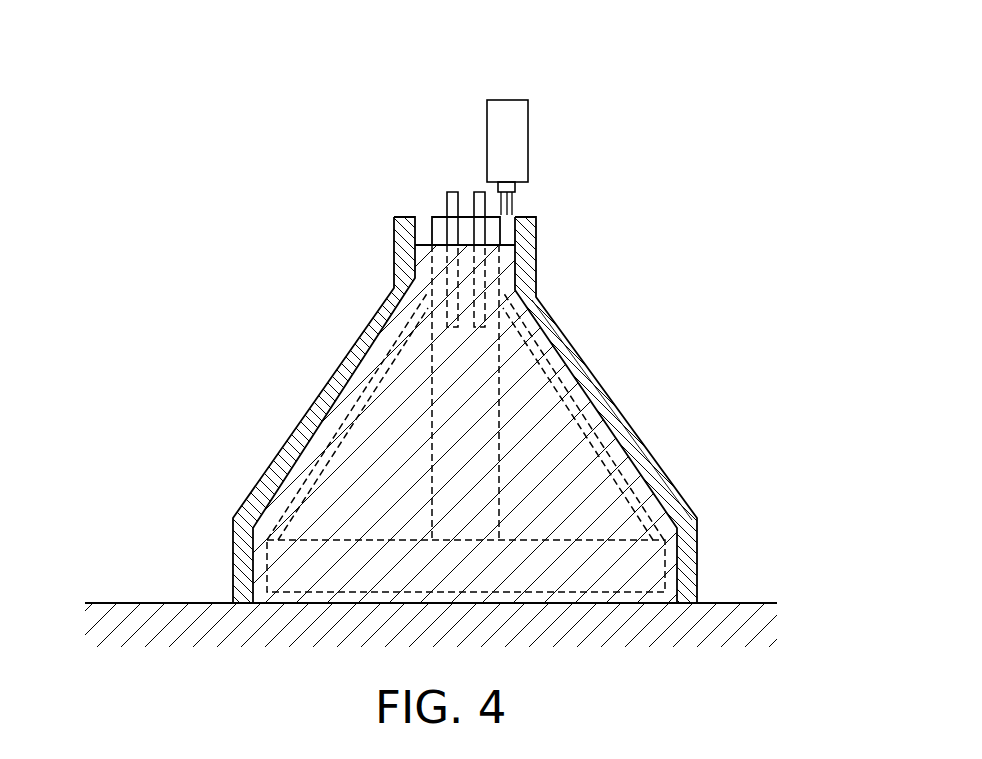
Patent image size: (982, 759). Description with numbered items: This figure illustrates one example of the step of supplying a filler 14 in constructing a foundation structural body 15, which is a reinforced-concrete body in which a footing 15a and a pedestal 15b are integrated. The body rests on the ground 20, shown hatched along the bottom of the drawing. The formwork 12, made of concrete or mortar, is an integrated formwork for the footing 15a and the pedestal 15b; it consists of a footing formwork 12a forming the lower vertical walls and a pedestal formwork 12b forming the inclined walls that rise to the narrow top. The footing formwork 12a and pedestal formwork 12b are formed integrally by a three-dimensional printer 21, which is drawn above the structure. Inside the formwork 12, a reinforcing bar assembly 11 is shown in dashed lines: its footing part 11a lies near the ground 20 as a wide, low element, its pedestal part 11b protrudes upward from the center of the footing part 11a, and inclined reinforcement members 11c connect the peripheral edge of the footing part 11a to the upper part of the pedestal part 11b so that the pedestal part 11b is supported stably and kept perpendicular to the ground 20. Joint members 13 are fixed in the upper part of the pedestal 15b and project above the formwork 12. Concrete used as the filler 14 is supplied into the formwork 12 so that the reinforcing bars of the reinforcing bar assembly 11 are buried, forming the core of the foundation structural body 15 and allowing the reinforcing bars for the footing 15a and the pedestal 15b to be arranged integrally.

The reinforcing bar assembly 11 is at (408, 418).
The footing part 11a is at (267, 565).
The pedestal part 11b is at (427, 278).
The reinforcement member 11c is at (335, 436).
The formwork 12 is at (681, 410).
The footing formwork 12a is at (693, 562).
The pedestal formwork 12b is at (657, 460).
The joint members 13 is at (447, 199).
The filler 14 is at (558, 375).
The foundation structural body 15 is at (220, 410).
The footing 15a is at (166, 561).
The pedestal 15b is at (146, 218).
The ground 20 is at (737, 603).
The three-dimensional (3D) printer 21 is at (512, 141).